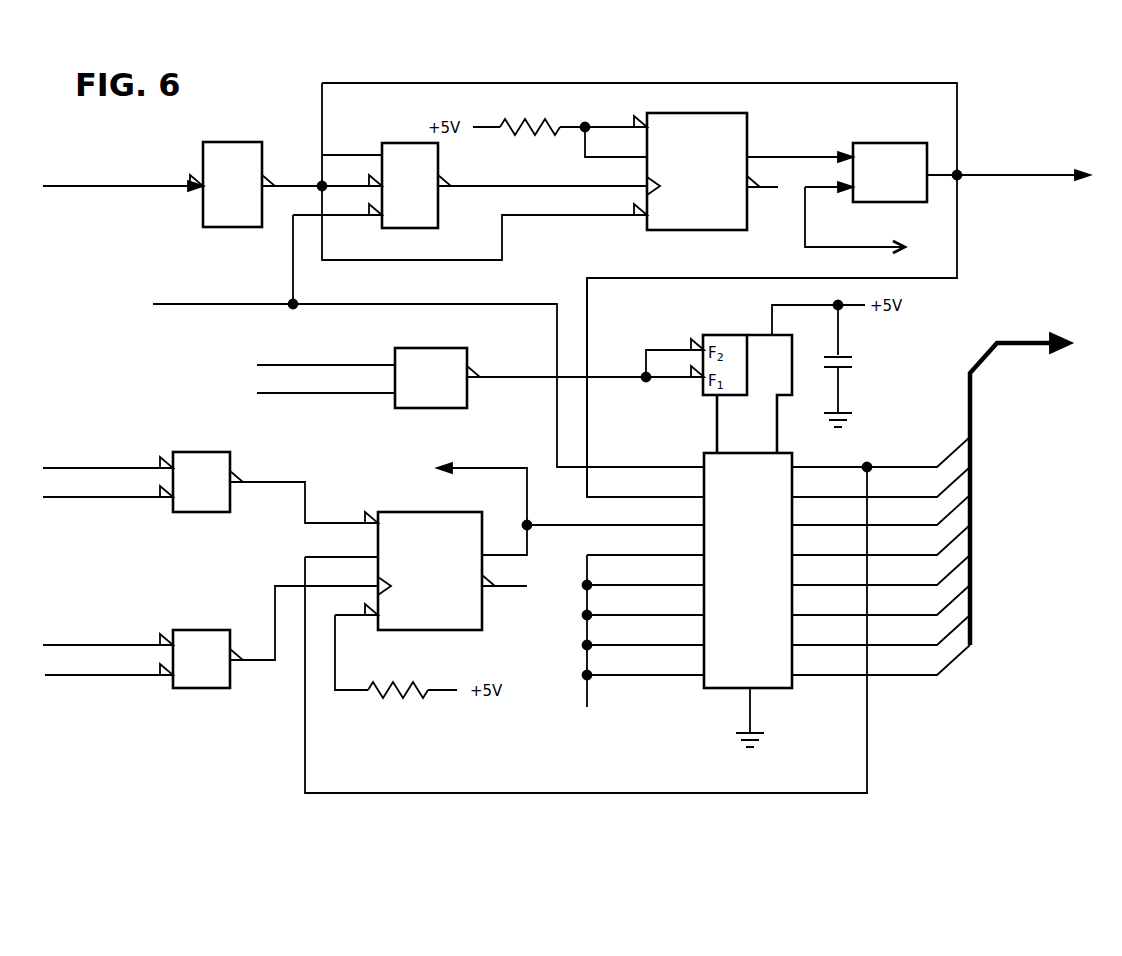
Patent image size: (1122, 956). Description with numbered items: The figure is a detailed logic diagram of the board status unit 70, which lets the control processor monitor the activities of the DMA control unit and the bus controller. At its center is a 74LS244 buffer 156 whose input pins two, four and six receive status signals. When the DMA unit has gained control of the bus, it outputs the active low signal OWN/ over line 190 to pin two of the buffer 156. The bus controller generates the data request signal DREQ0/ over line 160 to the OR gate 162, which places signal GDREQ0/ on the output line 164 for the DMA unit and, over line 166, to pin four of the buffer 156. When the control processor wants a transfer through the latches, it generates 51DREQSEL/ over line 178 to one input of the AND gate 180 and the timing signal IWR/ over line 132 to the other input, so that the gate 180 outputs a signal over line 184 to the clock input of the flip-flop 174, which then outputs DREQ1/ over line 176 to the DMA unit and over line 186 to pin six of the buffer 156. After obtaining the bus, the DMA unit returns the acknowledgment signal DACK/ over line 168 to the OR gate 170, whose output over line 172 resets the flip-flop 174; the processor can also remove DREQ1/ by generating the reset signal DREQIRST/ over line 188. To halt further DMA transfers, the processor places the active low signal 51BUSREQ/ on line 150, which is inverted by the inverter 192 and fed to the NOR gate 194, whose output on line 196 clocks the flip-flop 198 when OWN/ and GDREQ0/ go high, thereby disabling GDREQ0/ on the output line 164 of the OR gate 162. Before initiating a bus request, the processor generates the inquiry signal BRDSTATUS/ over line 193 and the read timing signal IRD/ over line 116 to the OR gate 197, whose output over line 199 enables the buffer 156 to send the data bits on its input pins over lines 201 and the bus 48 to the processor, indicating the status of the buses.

The board status unit 70 is at (1000, 102).
The inverter 192 is at (231, 142).
The line 150 is at (169, 186).
The NOR gate 194 is at (438, 167).
The line 196 is at (513, 186).
The flip-flop 198 is at (748, 116).
The OR gate 162 is at (877, 143).
The output line 164 is at (1040, 177).
The line 160 is at (803, 216).
The line 190 is at (258, 306).
The line 166 is at (588, 332).
The OR gate 197 is at (440, 348).
The line 193 is at (257, 368).
The line 199 is at (492, 378).
The line 116 is at (257, 396).
The line 168 is at (130, 464).
The OR gate 170 is at (207, 512).
The line 188 is at (113, 498).
The line 172 is at (305, 500).
The flip-flop 174 is at (405, 512).
The line 176 is at (527, 496).
The line 186 is at (588, 527).
The AND gate 180 is at (197, 630).
The line 178 is at (125, 647).
The line 132 is at (101, 676).
The line 184 is at (258, 661).
The 74LS244 buffer 156 is at (778, 688).
The lines 201 is at (955, 663).
The bus 48 is at (973, 405).